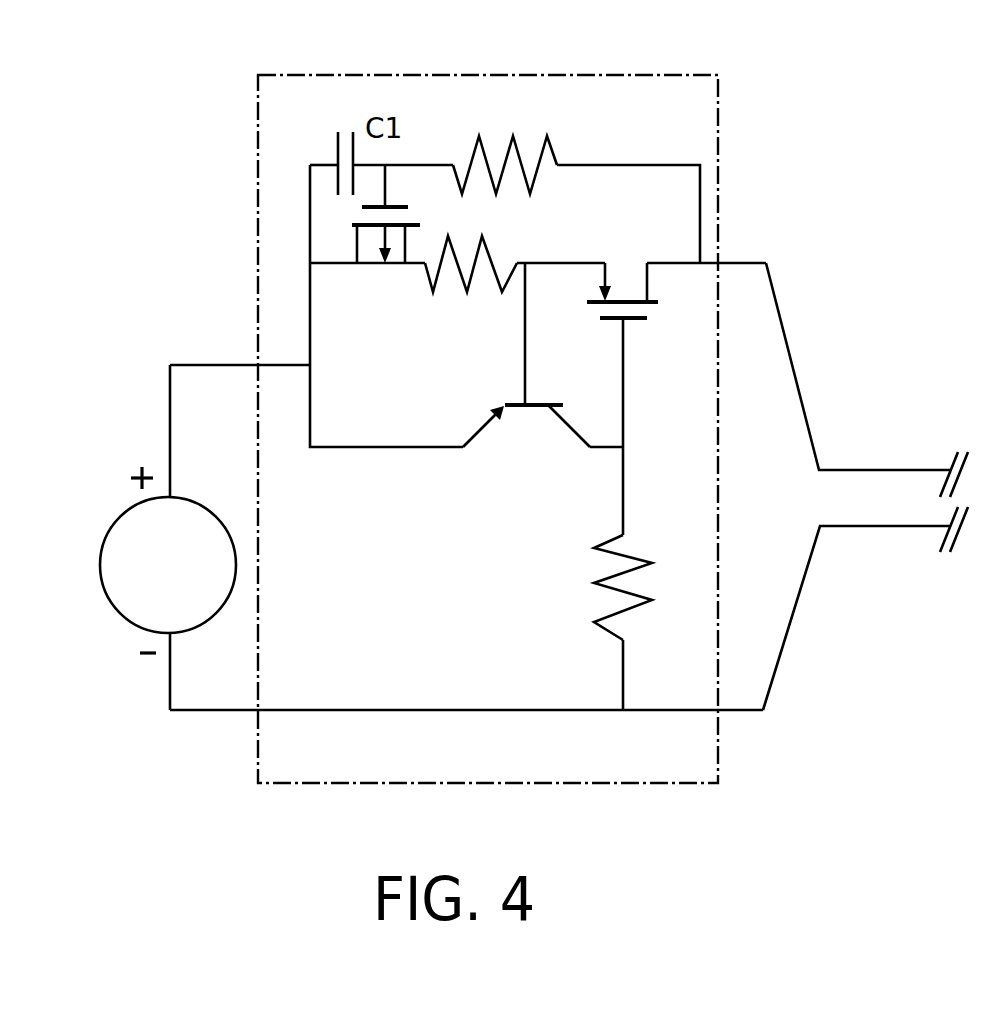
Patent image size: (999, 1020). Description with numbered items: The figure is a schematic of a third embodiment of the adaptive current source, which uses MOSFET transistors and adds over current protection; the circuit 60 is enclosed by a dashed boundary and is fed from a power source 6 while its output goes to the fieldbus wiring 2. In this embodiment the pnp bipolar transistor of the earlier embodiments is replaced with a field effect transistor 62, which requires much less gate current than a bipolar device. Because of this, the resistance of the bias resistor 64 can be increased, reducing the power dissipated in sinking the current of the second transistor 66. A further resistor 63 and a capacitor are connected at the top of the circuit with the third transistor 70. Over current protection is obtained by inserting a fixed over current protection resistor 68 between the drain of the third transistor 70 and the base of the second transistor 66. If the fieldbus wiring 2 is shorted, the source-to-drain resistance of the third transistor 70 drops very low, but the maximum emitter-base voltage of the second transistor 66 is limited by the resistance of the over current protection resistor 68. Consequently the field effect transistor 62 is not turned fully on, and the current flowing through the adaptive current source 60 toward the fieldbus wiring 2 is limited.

The control circuit 60 is at (368, 75).
The resistor R3 63 is at (485, 145).
The over current protection resistor (R4) 68 is at (492, 257).
The third transistor (Q3) 70 is at (352, 225).
The field effect transistor (Q4) 62 is at (623, 300).
The second transistor (Q2) 66 is at (505, 404).
The bias resistor (R2) 64 is at (627, 613).
The power source 6 is at (108, 530).
The fieldbus wiring 2 is at (790, 357).